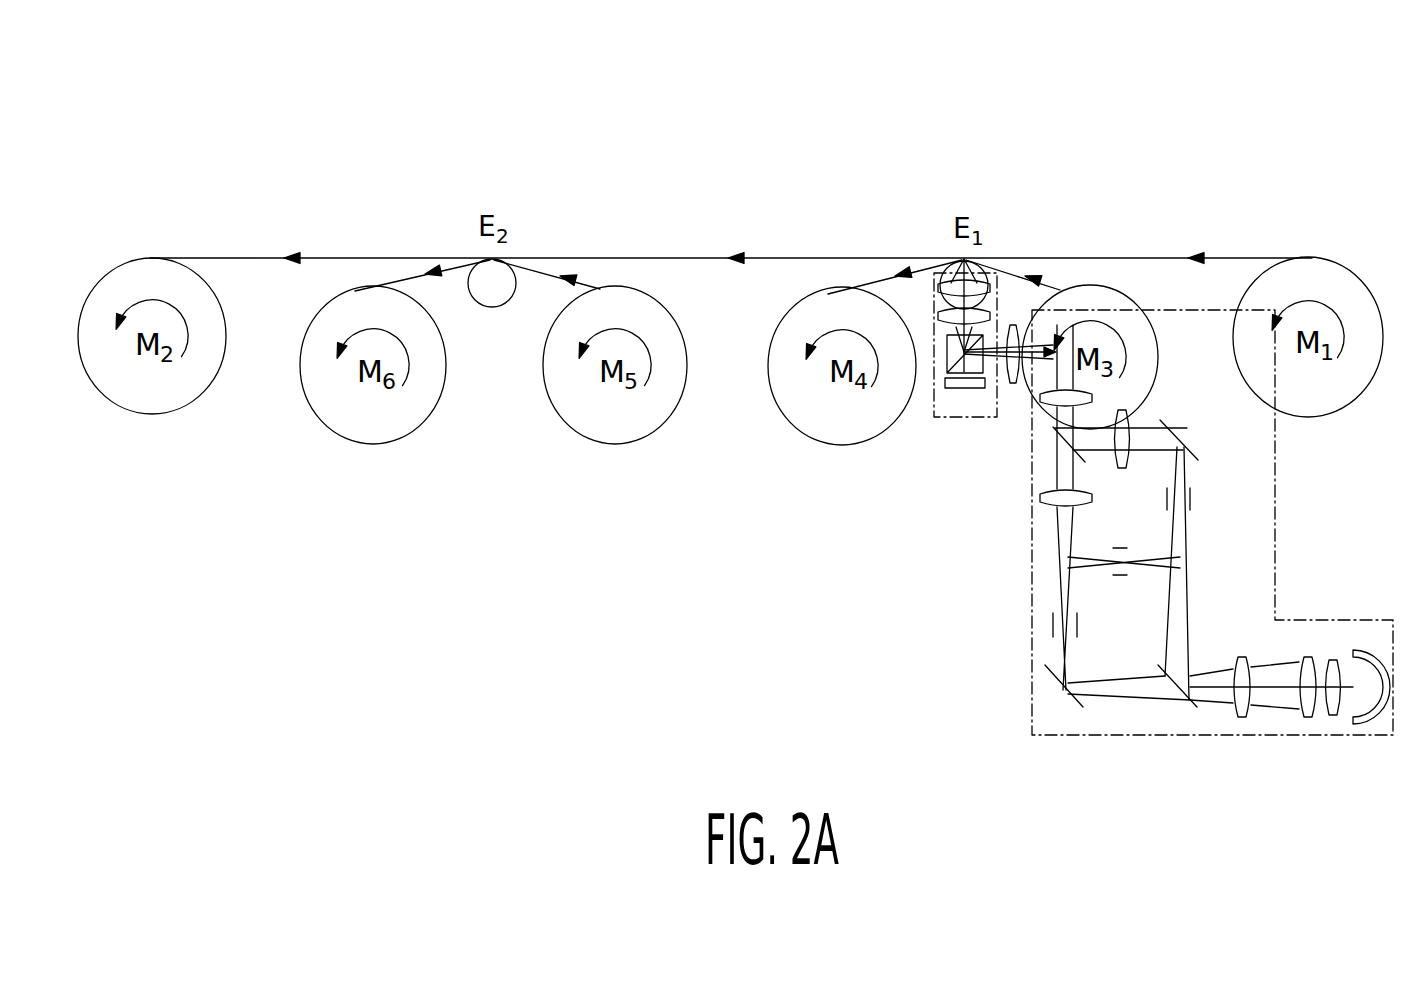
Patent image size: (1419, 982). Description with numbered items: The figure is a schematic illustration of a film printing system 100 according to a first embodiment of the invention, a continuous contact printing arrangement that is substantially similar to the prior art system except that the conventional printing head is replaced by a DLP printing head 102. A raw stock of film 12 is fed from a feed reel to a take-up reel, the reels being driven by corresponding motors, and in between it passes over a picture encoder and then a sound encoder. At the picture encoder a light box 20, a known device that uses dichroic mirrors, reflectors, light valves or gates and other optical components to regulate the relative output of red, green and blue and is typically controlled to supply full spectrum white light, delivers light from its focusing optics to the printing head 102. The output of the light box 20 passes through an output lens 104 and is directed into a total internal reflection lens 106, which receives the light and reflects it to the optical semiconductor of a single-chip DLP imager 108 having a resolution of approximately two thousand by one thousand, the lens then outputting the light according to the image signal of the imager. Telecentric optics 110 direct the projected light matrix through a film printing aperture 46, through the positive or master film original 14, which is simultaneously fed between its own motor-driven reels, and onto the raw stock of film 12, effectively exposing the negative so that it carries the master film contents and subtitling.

The film printing system 100 is at (1342, 125).
The raw stock of film 12 is at (1238, 257).
The original 14 is at (1058, 285).
The film printing aperture 46 is at (969, 259).
The output lens 104 is at (1012, 323).
The telecentric optics 110 is at (925, 300).
The DLP printing head 102 is at (975, 420).
The total internal reflection lens 106 is at (945, 363).
The single-chip DLP imager 108 is at (957, 388).
The light box 20 is at (1030, 652).